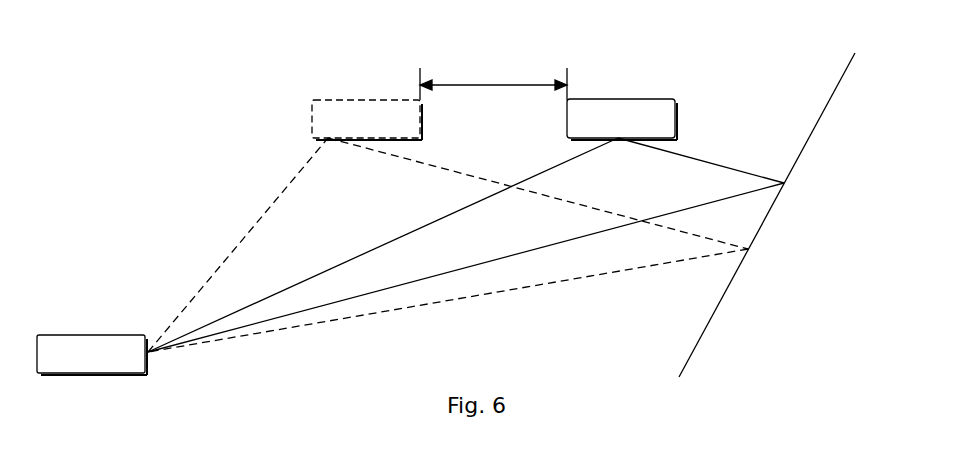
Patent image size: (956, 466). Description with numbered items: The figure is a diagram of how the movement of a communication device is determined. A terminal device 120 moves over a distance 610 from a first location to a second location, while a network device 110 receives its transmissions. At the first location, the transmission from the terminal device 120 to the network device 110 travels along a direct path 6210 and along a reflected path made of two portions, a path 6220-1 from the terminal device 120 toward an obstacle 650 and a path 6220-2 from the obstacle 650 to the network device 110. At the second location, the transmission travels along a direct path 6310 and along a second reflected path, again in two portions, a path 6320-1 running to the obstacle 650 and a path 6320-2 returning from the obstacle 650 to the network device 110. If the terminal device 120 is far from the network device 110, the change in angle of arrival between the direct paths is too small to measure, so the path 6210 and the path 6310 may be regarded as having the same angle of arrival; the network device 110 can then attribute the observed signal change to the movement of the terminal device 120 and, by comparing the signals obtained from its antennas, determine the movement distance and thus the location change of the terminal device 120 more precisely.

The network device 110 is at (60, 335).
The terminal device 120 is at (330, 100).
The distance 610 is at (493, 84).
The obstacle 650 is at (838, 83).
The path 6210 is at (238, 245).
The path 6310 is at (383, 245).
The path 6320-1 is at (701, 160).
The path 6320-2 is at (466, 267).
The path 6220-1 is at (538, 193).
The path 6220-2 is at (448, 300).